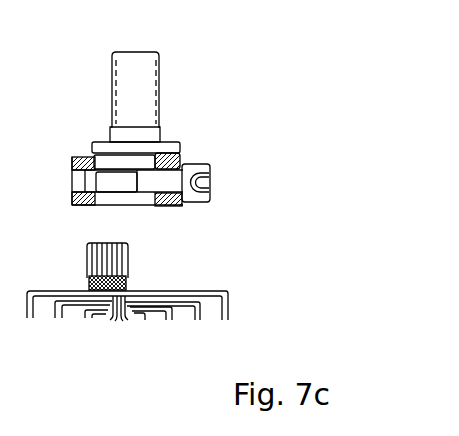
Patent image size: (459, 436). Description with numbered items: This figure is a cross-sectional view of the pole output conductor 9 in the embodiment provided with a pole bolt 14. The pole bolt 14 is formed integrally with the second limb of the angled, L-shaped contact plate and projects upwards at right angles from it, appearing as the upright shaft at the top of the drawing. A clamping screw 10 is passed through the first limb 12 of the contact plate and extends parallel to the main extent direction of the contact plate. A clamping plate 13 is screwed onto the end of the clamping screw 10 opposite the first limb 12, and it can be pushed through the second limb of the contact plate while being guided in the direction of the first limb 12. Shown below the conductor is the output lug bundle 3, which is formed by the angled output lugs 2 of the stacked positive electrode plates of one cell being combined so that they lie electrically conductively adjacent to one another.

The pole output conductor 9 is at (58, 42).
The pole bolt 14 is at (137, 90).
The clamping plate 13 is at (76, 157).
The first limb 12 is at (182, 153).
The clamping screw 10 is at (210, 182).
The output lug bundle 3 is at (103, 253).
The output lugs 2 is at (163, 287).